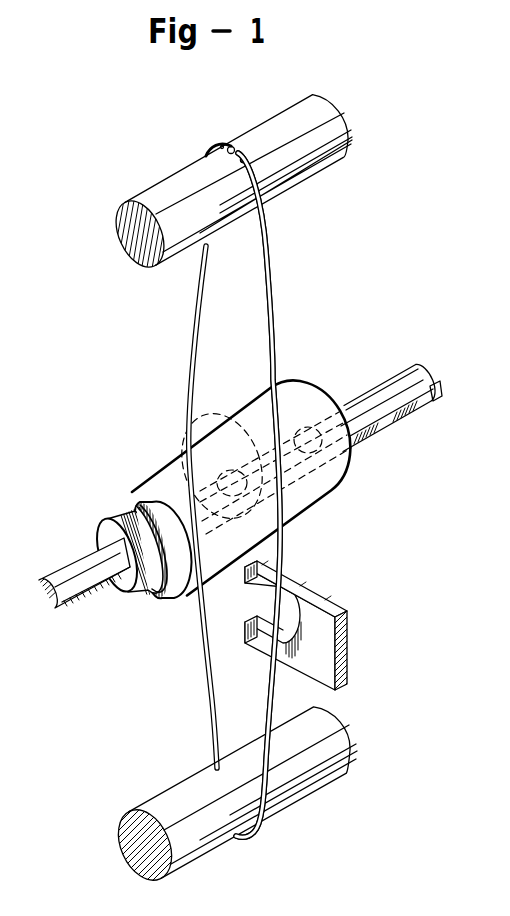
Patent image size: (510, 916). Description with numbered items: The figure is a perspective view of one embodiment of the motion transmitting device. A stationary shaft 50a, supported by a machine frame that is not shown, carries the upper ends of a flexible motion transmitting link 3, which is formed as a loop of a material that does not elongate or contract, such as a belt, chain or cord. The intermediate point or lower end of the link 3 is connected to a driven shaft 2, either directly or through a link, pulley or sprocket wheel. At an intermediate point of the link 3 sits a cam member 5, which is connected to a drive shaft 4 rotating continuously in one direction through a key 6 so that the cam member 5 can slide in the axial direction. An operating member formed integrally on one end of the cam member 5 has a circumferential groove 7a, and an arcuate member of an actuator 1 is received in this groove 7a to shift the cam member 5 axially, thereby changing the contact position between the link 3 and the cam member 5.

The actuator 1 is at (350, 636).
The driven shaft 2 is at (349, 754).
The flexible motion transmitting link 3 is at (274, 293).
The drive shaft 4 is at (389, 381).
The cam member 5 is at (331, 467).
The key 6 is at (390, 422).
The circumferential groove 7a is at (134, 507).
The stationary shaft 50a is at (346, 132).